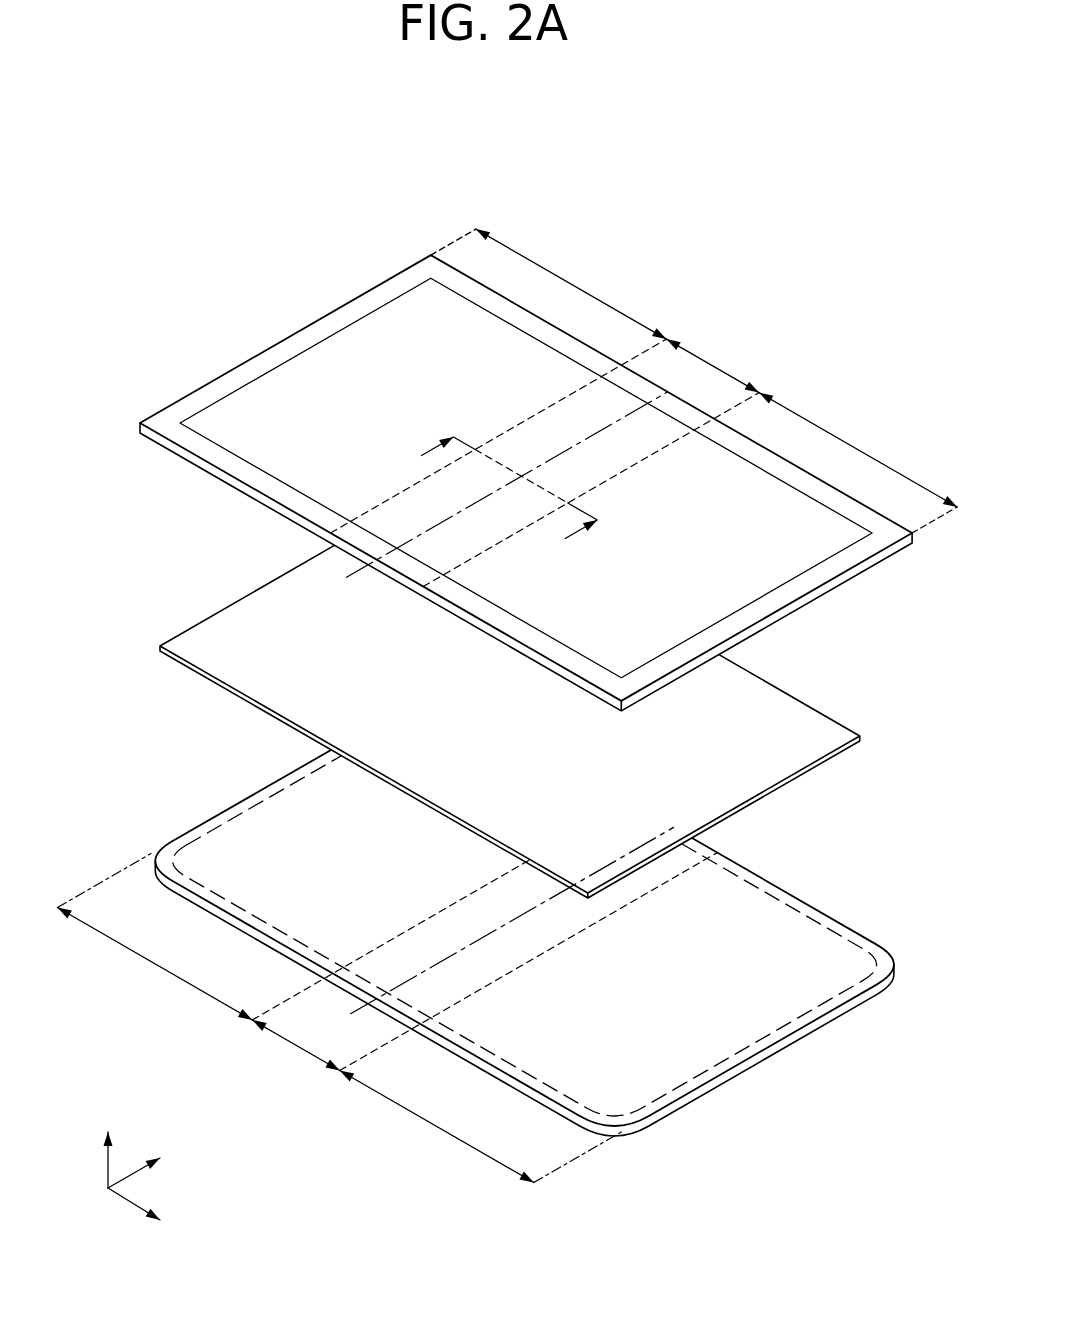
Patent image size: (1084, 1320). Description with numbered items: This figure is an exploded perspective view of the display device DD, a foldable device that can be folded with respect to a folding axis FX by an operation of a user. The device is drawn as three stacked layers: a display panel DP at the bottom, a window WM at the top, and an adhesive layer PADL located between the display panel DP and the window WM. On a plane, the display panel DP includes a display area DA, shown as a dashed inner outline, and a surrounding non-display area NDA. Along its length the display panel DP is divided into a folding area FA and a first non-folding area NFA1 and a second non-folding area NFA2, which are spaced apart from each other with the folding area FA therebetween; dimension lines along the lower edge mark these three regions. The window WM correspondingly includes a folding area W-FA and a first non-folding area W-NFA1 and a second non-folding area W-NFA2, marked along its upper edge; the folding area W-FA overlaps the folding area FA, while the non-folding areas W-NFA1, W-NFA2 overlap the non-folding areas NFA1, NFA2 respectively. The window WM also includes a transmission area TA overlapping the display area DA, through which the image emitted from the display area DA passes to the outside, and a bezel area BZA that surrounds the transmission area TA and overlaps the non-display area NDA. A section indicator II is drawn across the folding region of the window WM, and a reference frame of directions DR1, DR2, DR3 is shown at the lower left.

The display device DD is at (803, 234).
The window WM is at (130, 426).
The bezel area BZA is at (294, 349).
The transmission area TA is at (366, 334).
The first non-folding area of the window W-NFA1 is at (549, 284).
The folding area of the window W-FA is at (547, 462).
The second non-folding area of the window W-NFA2 is at (858, 463).
The section line II-II' II is at (498, 497).
The folding axis FX is at (495, 717).
The adhesive layer PADL is at (183, 655).
The display panel DP is at (155, 853).
The non-display area NDA is at (778, 893).
The display area DA is at (810, 930).
The first non-folding area NFA1 is at (155, 937).
The folding area FA is at (484, 962).
The second non-folding area NFA2 is at (482, 1127).
The first direction DR1 is at (158, 1165).
The second direction DR2 is at (159, 1214).
The third direction DR3 is at (108, 1146).